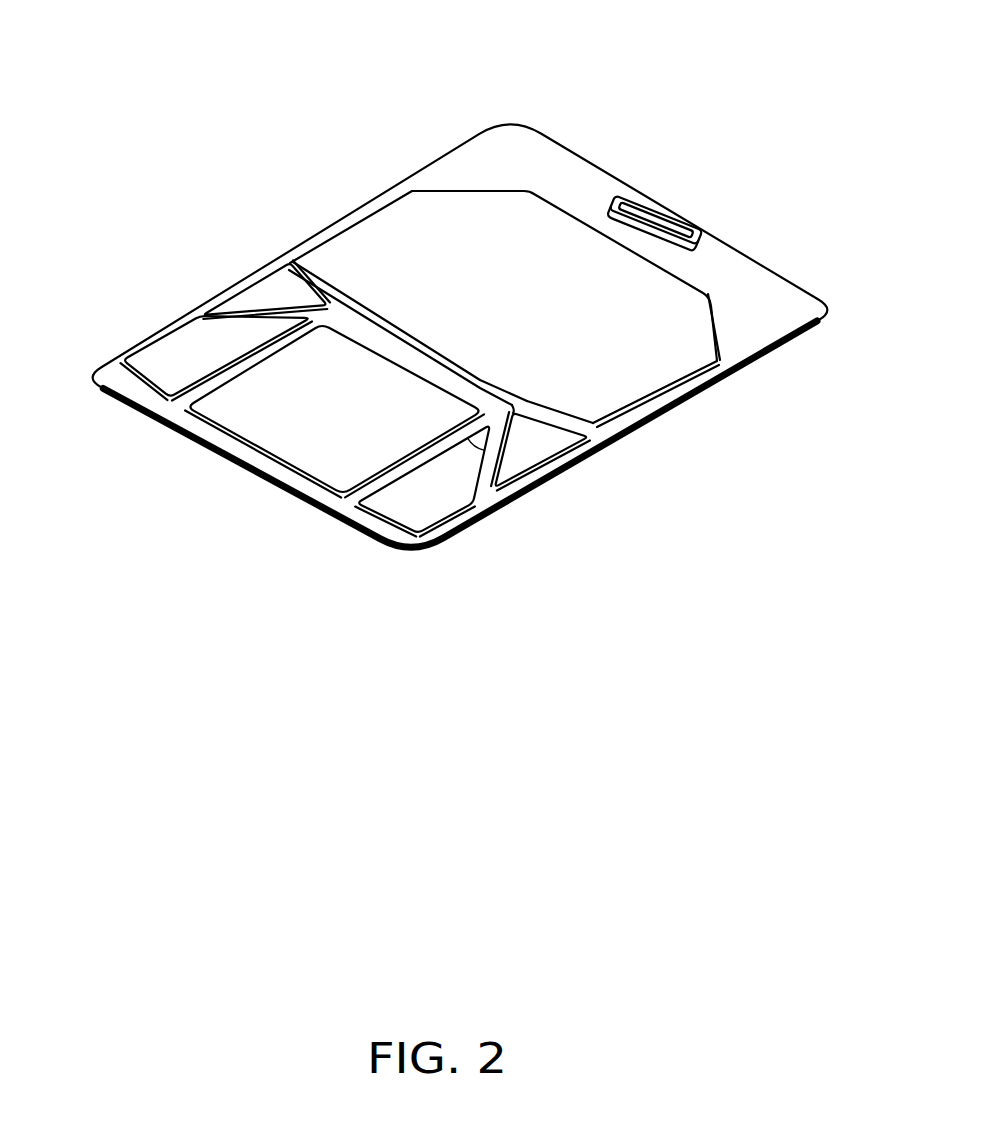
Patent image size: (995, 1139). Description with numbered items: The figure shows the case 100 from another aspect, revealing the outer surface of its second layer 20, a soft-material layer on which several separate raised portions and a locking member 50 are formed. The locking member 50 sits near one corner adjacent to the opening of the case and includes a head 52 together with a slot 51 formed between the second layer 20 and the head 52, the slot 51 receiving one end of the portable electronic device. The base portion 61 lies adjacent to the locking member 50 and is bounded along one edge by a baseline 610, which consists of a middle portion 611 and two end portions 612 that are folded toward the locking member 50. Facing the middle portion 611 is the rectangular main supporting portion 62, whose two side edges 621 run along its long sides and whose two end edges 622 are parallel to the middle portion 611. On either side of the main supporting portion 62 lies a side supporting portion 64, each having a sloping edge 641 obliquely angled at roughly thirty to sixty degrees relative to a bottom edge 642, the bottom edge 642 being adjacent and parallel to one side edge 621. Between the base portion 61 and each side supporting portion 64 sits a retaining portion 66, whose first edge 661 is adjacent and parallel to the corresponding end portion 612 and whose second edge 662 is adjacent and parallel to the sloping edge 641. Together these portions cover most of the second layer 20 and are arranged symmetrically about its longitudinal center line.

The case 100 is at (231, 56).
The second layer 20 is at (753, 293).
The locking member 50 is at (711, 219).
The slot 51 is at (668, 250).
The head 52 is at (637, 207).
The base portion 61 is at (397, 420).
The baseline 610 is at (441, 239).
The middle portion 611 is at (420, 340).
The end portion 612 is at (443, 255).
The main supporting portion 62 is at (334, 480).
The side edge 621 is at (400, 462).
The end edge 622 is at (303, 432).
The side supporting portion 64 is at (343, 430).
The sloping edge 641 is at (247, 316).
The bottom edge 642 is at (215, 383).
The retaining portion 66 is at (372, 403).
The first edge 661 is at (323, 260).
The second edge 662 is at (282, 312).